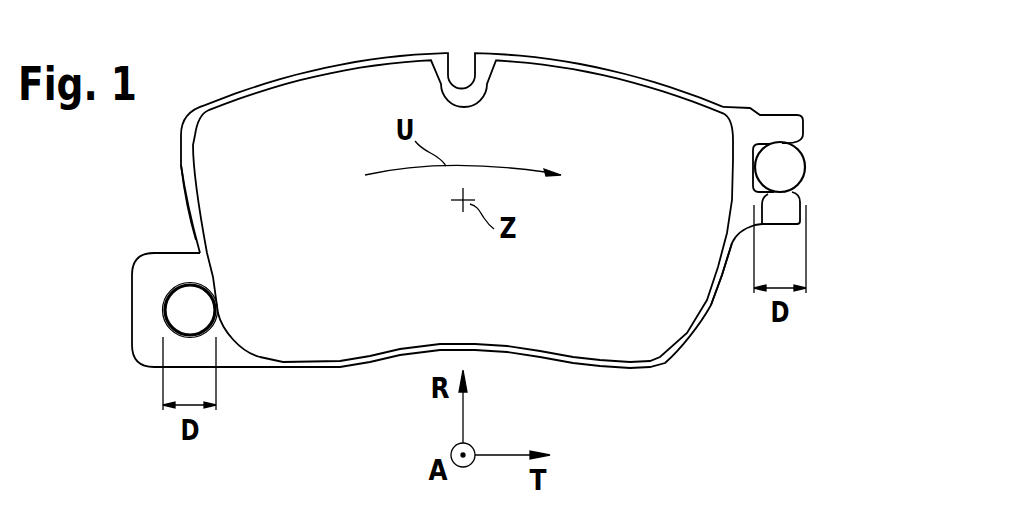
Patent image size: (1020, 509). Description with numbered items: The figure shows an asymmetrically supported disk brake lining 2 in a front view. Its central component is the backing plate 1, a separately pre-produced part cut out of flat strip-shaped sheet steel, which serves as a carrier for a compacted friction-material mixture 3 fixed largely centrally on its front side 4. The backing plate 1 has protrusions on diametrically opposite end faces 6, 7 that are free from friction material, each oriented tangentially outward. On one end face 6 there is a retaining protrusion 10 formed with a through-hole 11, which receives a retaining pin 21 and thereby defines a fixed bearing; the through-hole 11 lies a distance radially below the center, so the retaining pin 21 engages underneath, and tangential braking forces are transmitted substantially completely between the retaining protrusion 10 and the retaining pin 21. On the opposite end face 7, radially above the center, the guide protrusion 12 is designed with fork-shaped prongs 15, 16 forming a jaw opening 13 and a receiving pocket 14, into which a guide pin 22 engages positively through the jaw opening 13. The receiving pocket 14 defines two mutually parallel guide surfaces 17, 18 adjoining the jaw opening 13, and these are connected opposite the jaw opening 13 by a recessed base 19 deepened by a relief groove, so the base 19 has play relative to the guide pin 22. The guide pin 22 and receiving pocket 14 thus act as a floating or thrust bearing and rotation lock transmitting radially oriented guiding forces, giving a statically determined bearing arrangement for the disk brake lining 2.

The backing plate 1 is at (195, 97).
The disk brake lining 2 is at (258, 60).
The friction-material mixture 3 is at (368, 328).
The front side 4 is at (599, 258).
The end face 6 is at (191, 209).
The end face 7 is at (720, 277).
The retaining protrusion 10 is at (173, 264).
The through-hole 11 is at (165, 299).
The guide protrusion 12 is at (737, 117).
The jaw opening 13 is at (794, 147).
The receiving pocket 14 is at (763, 227).
The prong 15 is at (775, 118).
The prong 16 is at (784, 222).
The guide surface 17 is at (797, 120).
The guide surface 18 is at (786, 218).
The base 19 is at (751, 157).
The retaining pin 21 is at (178, 307).
The guide pin 22 is at (797, 173).